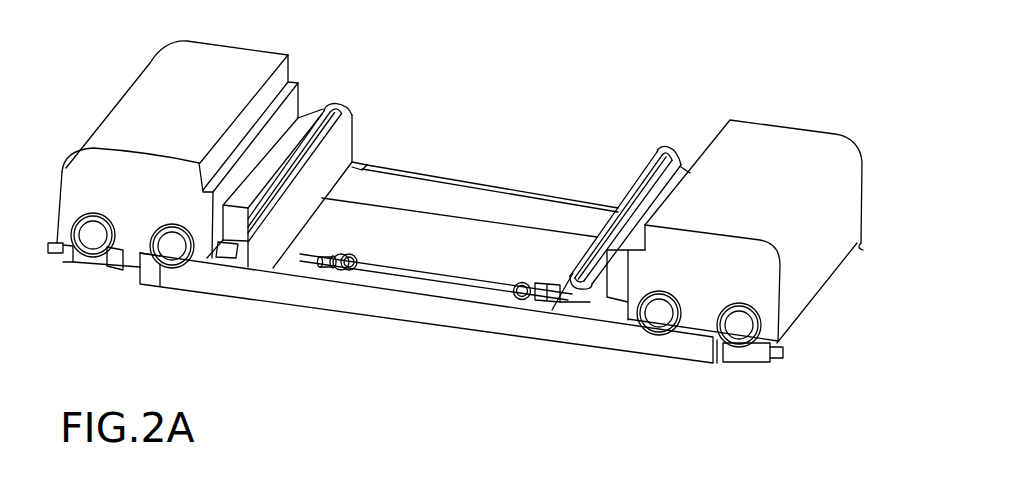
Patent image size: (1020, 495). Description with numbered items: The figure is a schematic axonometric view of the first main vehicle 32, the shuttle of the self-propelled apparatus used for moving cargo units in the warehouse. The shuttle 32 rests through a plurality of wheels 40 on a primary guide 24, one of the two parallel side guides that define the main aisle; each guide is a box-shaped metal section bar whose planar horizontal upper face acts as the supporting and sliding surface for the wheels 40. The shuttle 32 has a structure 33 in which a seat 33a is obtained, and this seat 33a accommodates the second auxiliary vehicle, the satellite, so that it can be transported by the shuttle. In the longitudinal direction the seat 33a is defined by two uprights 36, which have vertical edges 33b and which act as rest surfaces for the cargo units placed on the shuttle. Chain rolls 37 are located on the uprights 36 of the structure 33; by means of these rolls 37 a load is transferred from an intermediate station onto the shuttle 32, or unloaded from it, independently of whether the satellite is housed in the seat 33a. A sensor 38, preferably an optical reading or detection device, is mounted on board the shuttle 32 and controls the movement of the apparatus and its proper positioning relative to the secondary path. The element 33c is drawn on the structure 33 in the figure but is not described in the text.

The primary guide 24 is at (480, 313).
The first main vehicle 32 is at (300, 63).
The structure 33 is at (744, 148).
The seat 33a is at (412, 245).
The vertical edge 33b is at (273, 243).
The connecting rod 33c is at (432, 300).
The upright 36 is at (248, 242).
The chain roll 37 is at (342, 110).
The sensor 38 is at (118, 270).
The wheel 40 is at (172, 248).